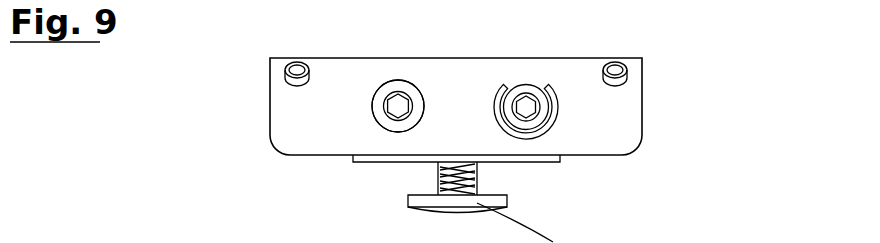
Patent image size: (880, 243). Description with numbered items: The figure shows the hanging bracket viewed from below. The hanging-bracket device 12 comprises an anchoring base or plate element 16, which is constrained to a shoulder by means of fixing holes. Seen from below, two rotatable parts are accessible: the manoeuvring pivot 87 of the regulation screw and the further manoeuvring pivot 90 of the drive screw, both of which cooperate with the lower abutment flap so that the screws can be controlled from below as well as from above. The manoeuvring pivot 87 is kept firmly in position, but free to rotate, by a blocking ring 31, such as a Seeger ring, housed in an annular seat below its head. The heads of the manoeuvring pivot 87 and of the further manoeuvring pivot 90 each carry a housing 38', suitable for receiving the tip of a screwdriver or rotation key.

The hanging-bracket device 12 is at (237, 102).
The plate element 16 is at (340, 121).
The blocking ring 31 is at (500, 98).
The housing 38' is at (469, 66).
The manoeuvring pivot 87 is at (540, 122).
The further manoeuvring pivot 90 is at (382, 125).